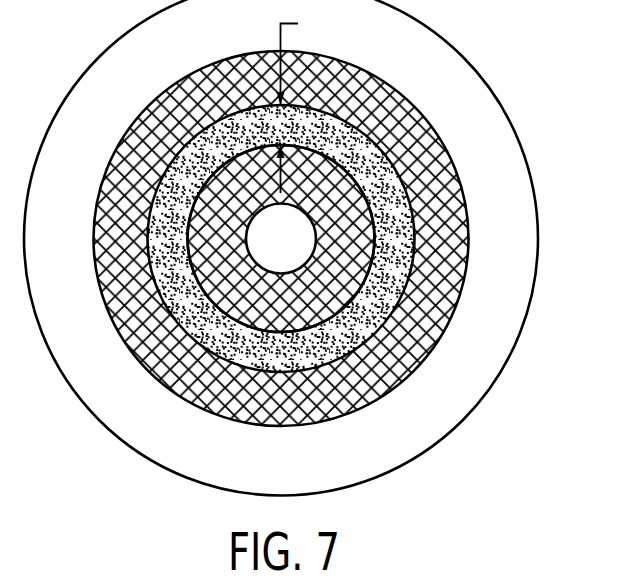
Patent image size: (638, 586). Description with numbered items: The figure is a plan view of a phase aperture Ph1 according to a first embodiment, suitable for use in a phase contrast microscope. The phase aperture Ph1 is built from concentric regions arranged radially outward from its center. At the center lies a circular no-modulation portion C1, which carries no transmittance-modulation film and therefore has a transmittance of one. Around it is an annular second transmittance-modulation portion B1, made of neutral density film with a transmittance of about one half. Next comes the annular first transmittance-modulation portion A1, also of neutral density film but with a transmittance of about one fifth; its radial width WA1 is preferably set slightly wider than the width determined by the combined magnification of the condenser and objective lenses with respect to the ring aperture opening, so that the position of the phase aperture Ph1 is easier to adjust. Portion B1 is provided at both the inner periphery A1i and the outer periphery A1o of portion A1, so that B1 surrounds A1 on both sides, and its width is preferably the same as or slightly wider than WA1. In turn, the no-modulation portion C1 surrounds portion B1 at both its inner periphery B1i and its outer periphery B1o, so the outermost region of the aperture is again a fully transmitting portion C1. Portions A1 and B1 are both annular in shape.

The no-modulation portion C1 is at (298, 248).
The second transmittance-modulation annular portion B1 is at (299, 238).
The first transmittance-modulation annular portion A1 is at (299, 238).
The inner periphery of portion B1 B1i is at (318, 198).
The inner periphery of portion A1 A1i is at (390, 198).
The outer periphery of portion A1 A1o is at (383, 252).
The outer periphery of portion B1 B1o is at (333, 252).
The phase aperture Ph1 is at (553, 197).
The width of portion A1 WA1 is at (310, 104).